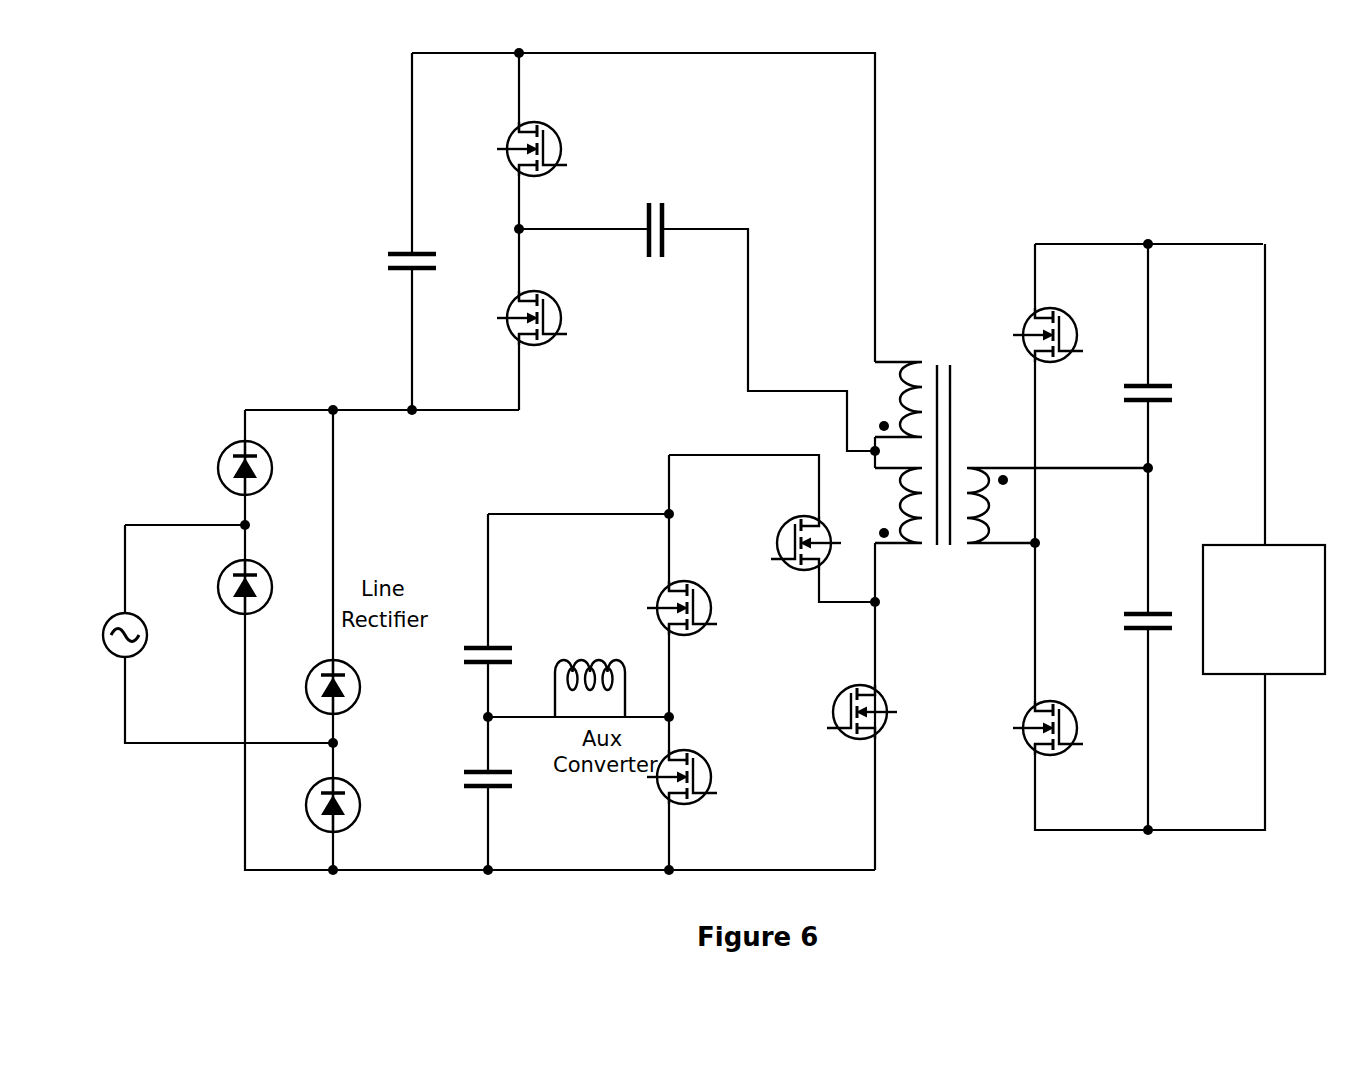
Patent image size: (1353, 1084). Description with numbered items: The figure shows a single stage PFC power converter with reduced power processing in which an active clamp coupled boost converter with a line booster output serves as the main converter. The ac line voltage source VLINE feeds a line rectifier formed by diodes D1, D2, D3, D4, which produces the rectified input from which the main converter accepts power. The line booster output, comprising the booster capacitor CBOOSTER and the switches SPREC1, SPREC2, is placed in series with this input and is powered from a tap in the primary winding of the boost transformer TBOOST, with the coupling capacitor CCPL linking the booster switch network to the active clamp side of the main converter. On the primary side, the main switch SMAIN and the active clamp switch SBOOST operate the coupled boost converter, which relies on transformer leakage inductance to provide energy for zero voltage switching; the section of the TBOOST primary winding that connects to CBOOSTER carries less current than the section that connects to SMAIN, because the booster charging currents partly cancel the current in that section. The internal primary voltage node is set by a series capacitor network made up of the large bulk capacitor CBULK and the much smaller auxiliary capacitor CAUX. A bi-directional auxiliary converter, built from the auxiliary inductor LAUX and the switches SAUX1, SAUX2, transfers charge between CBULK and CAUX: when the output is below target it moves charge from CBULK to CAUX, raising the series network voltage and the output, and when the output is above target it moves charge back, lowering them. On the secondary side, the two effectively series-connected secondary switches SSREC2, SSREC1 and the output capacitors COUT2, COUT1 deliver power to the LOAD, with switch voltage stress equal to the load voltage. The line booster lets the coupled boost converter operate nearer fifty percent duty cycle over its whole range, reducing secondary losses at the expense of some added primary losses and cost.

The line voltage source VLINE is at (124, 622).
The line rectifier diode D1 is at (261, 468).
The line rectifier diode D2 is at (261, 587).
The line rectifier diode D3 is at (348, 687).
The line rectifier diode D4 is at (348, 805).
The booster capacitor CBOOSTER is at (448, 266).
The booster switch SPREC1 is at (534, 134).
The booster switch SPREC2 is at (534, 303).
The coupling capacitor CCPL is at (657, 250).
The bulk capacitor CBULK is at (462, 657).
The auxiliary capacitor CAUX is at (463, 780).
The auxiliary inductor LAUX is at (590, 672).
The auxiliary converter switch SAUX1 is at (684, 594).
The auxiliary converter switch SAUX2 is at (684, 764).
The active clamp switch SBOOST is at (806, 528).
The main switch SMAIN is at (862, 697).
The boost transformer TBOOST is at (1011, 441).
The secondary switch SSREC2 is at (1050, 320).
The secondary switch SSREC1 is at (1050, 715).
The output capacitor COUT2 is at (1122, 397).
The output capacitor COUT1 is at (1122, 625).
The load LOAD is at (1264, 609).